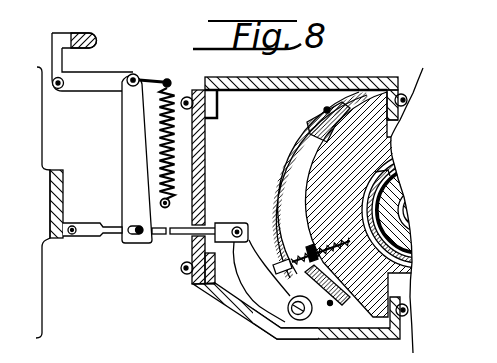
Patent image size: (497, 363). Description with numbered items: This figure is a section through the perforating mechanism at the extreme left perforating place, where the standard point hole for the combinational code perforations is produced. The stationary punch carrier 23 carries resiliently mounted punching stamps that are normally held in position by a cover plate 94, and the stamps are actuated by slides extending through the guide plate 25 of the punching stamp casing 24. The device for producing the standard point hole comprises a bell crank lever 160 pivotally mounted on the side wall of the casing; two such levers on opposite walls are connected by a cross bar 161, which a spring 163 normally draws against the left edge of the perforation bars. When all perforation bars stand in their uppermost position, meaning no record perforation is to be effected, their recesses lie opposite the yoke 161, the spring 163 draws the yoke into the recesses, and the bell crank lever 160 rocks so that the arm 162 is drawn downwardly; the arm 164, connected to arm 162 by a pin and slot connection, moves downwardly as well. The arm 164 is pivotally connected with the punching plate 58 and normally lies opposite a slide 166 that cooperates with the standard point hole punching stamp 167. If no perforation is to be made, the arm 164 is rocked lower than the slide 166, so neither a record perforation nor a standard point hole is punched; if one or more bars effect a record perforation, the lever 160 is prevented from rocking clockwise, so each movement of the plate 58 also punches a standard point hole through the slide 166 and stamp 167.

The punch carrier 23 is at (372, 90).
The punching stamp casing 24 is at (232, 295).
The guide plate 25 is at (192, 248).
The punching plate 58 is at (50, 195).
The cover plate 94 is at (307, 127).
The bell crank lever 160 is at (95, 87).
The cross bar 161 is at (92, 36).
The arm 162 is at (127, 135).
The spring 163 is at (175, 78).
The arm 164 is at (115, 229).
The slide 166 is at (242, 228).
The standard point hole punching stamp 167 is at (350, 238).